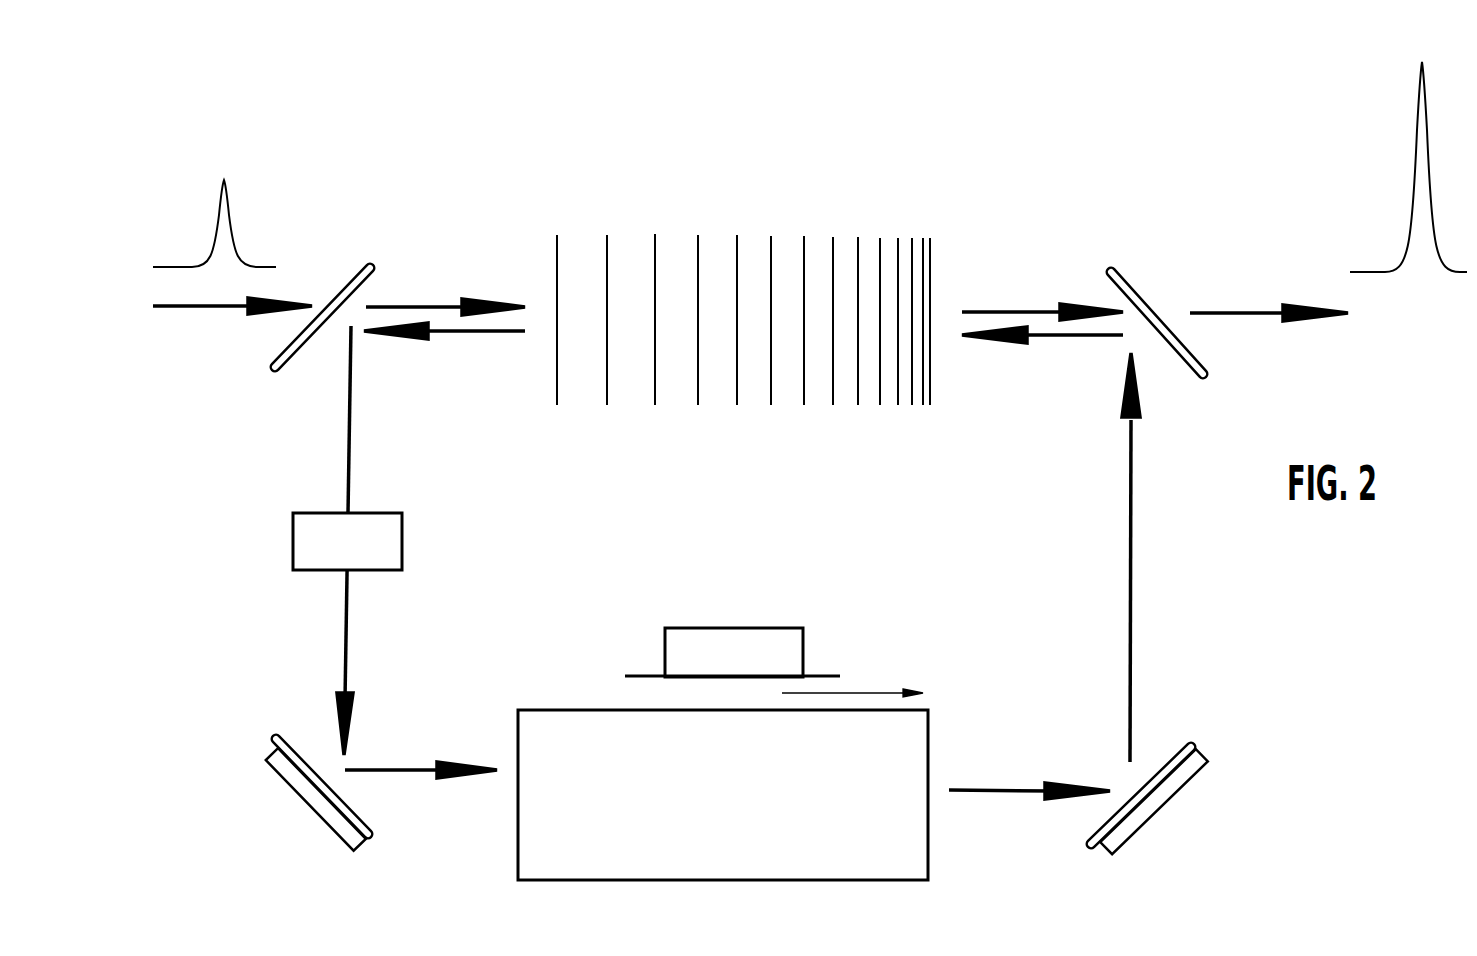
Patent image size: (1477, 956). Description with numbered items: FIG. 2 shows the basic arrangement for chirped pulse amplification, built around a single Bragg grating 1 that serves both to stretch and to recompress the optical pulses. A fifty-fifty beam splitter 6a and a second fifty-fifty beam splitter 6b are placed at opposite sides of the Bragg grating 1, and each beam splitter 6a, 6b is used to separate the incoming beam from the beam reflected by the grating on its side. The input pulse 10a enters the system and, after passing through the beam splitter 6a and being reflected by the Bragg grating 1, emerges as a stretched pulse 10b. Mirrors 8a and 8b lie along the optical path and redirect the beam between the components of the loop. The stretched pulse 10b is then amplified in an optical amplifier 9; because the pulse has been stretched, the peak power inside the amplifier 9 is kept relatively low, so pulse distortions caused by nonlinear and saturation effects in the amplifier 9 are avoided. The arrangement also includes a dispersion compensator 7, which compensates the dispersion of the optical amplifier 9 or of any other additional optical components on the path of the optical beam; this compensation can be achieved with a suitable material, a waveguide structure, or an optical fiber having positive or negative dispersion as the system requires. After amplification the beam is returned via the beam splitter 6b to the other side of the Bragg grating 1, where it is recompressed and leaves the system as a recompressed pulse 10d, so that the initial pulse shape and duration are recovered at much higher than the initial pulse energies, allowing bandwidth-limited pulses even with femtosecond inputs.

The Bragg grating 1 is at (808, 223).
The 50:50 beam splitter 6a is at (378, 268).
The 50:50 beam splitter 6b is at (1098, 270).
The dispersion compensator 7 is at (388, 520).
The mirror 8a is at (292, 778).
The mirror 8b is at (1152, 822).
The optical amplifier 9 is at (928, 865).
The input pulse 10a is at (231, 212).
The stretched pulse 10b is at (738, 634).
The recompressed pulse 10d is at (1412, 196).